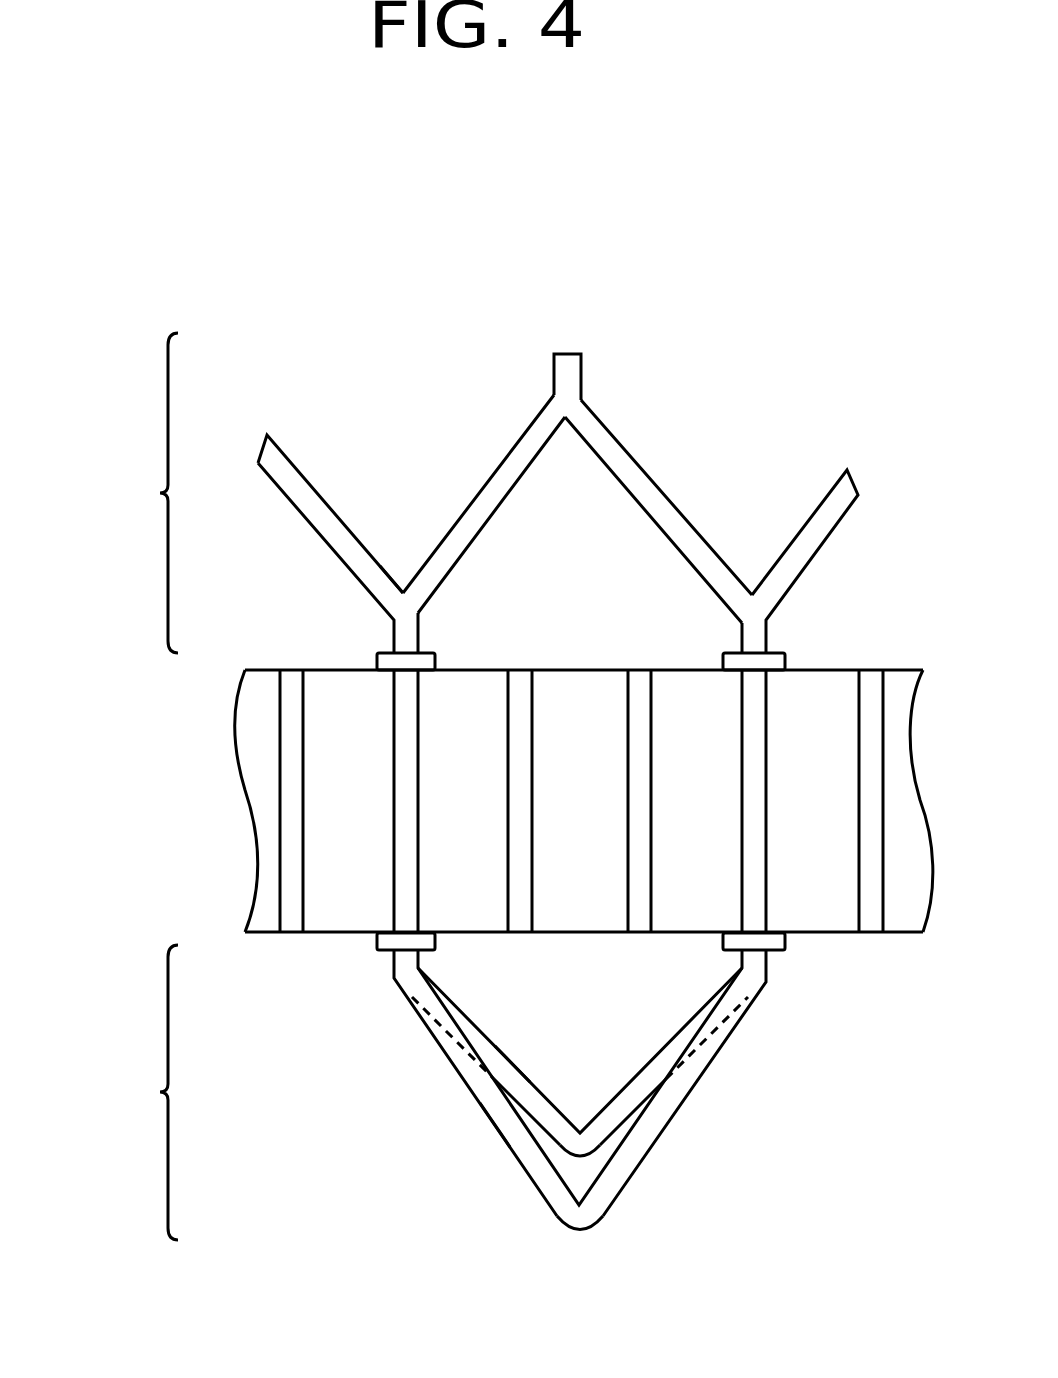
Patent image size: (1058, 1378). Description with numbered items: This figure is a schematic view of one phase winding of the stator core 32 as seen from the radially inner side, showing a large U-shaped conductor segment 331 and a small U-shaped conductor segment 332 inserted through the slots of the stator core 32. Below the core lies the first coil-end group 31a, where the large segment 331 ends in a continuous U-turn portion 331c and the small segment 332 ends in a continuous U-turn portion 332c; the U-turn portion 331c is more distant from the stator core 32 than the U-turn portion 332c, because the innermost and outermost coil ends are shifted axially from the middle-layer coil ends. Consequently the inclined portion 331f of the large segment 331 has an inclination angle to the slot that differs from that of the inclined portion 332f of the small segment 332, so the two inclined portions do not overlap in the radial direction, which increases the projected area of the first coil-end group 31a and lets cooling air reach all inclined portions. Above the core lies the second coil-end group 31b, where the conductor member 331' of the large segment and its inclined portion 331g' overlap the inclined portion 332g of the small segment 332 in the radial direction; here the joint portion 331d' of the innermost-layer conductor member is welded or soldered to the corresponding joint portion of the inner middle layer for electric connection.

The first coil-end group 31a is at (125, 1092).
The second coil-end group 31b is at (125, 493).
The stator core 32 is at (820, 917).
The large U-shaped conductor segment 331 is at (565, 831).
The conductor member of large segment 331' is at (658, 511).
The U-turn portion of large segment 331c is at (562, 1213).
The joint portion of innermost-layer conductor member 331d' is at (571, 336).
The inclined portion of large segment 331f is at (498, 1120).
The inclined portion of large segment 331g' is at (361, 486).
The small U-shaped conductor segment 332 is at (620, 1092).
The U-turn portion of small segment 332c is at (577, 1150).
The inclined portion of small segment 332f is at (512, 1075).
The inclined portion of small segment 332g is at (467, 533).